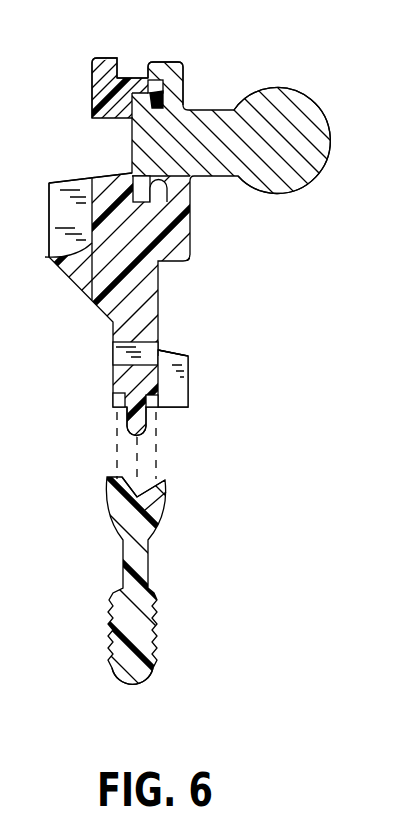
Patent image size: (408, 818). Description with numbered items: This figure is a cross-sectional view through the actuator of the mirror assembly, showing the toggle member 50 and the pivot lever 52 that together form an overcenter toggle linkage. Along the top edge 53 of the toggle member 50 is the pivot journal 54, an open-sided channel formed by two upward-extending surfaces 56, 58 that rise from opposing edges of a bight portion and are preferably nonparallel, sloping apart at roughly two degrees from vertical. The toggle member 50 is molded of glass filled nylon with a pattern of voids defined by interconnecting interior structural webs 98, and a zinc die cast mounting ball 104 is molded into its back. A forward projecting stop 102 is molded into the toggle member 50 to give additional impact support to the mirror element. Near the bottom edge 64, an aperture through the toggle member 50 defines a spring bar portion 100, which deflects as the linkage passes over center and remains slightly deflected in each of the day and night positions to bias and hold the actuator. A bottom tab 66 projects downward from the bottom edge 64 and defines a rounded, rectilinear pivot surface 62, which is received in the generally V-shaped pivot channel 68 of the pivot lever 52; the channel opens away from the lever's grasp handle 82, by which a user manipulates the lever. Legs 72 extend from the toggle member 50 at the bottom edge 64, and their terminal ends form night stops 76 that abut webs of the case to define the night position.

The toggle member 50 is at (198, 216).
The pivot lever 52 is at (168, 594).
The top edge 53 is at (113, 62).
The pivot journal 54 is at (141, 70).
The journal surface 56 is at (157, 62).
The journal surface 58 is at (120, 67).
The pivot surface 62 is at (124, 440).
The bottom edge 64 is at (110, 413).
The bottom tab 66 is at (157, 421).
The pivot channel 68 is at (144, 481).
The legs 72 is at (188, 351).
The night stops 76 is at (190, 392).
The grasp handle 82 is at (146, 678).
The interior structural webs 98 is at (50, 257).
The spring bar portion 100 is at (120, 375).
The forward projecting stops 102 is at (82, 185).
The mounting ball 104 is at (292, 94).